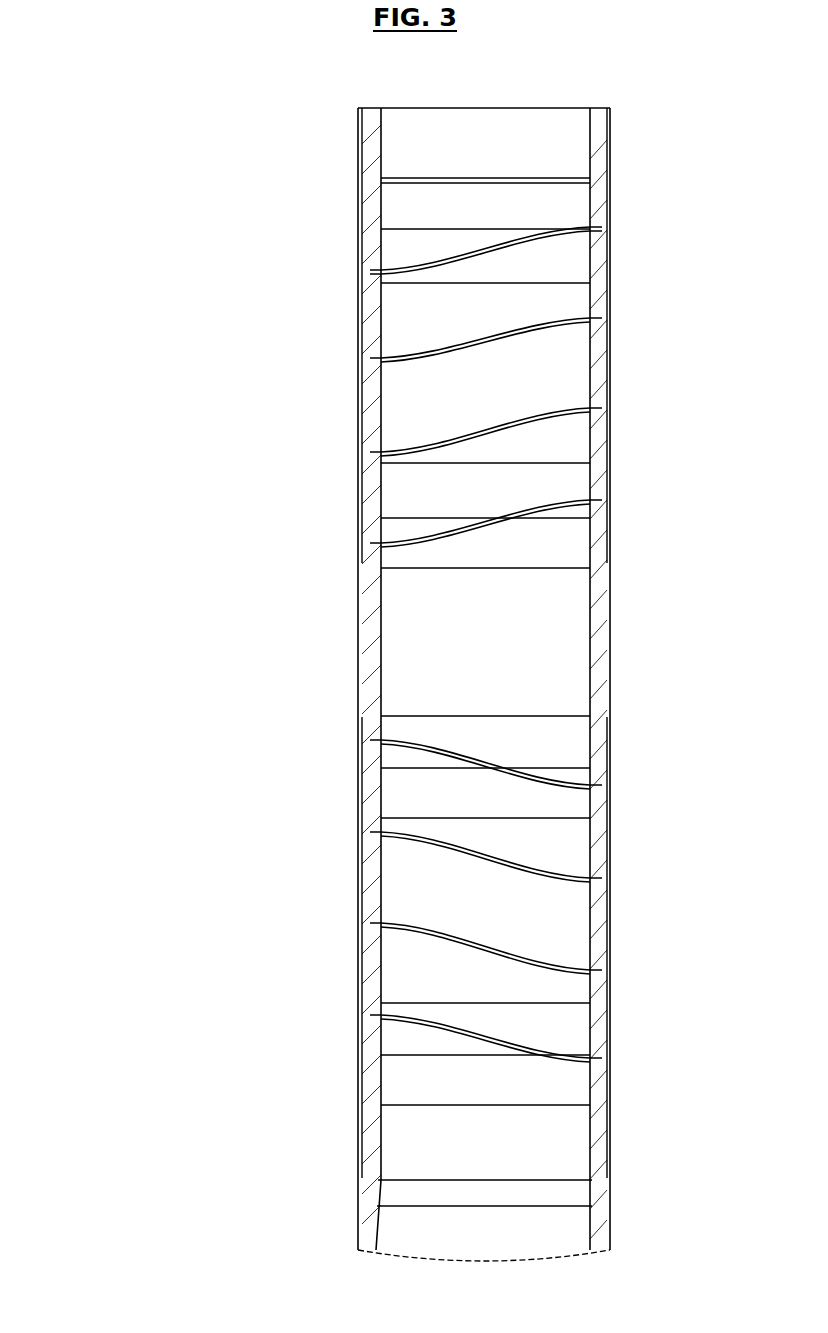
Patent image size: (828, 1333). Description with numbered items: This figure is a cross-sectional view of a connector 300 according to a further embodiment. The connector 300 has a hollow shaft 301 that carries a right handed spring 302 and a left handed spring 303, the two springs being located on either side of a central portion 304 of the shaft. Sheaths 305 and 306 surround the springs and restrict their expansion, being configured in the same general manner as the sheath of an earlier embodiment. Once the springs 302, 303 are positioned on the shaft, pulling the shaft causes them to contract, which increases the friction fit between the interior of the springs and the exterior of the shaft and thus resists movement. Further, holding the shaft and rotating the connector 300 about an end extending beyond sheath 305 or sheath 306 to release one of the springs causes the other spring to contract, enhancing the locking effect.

The connector 300 is at (152, 151).
The hollow shaft 301 is at (351, 646).
The right handed spring 302 is at (617, 220).
The left handed spring 303 is at (617, 748).
The central portion 304 is at (617, 550).
The sheath 305 is at (353, 385).
The sheath 306 is at (355, 952).